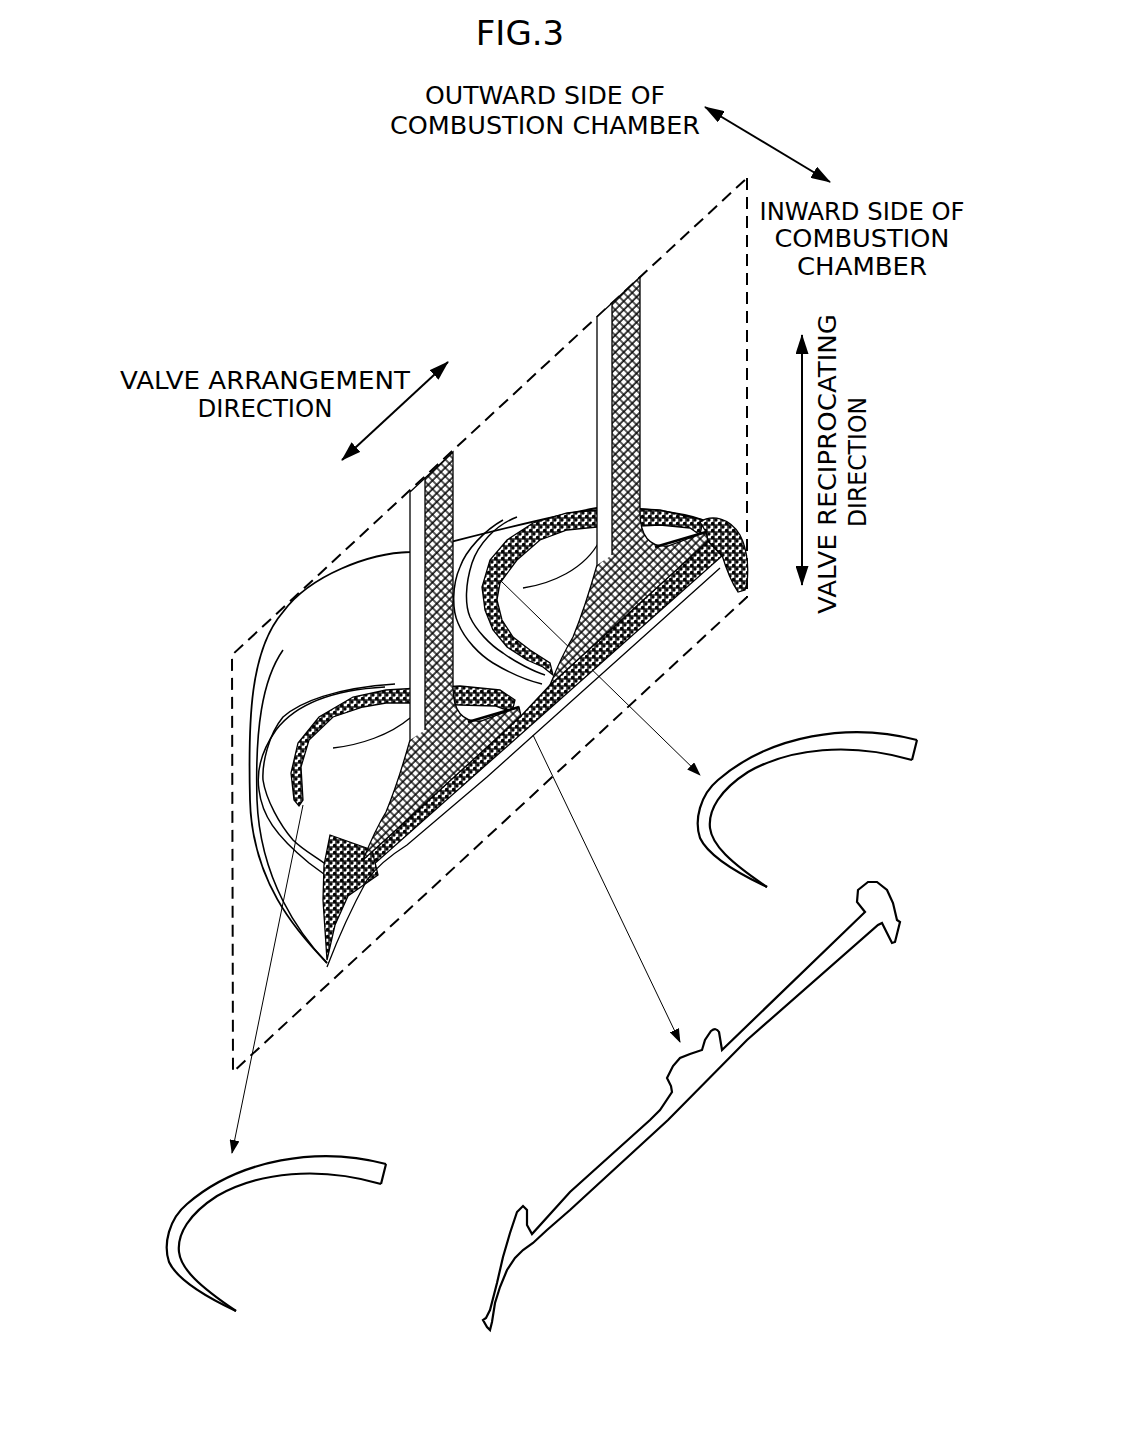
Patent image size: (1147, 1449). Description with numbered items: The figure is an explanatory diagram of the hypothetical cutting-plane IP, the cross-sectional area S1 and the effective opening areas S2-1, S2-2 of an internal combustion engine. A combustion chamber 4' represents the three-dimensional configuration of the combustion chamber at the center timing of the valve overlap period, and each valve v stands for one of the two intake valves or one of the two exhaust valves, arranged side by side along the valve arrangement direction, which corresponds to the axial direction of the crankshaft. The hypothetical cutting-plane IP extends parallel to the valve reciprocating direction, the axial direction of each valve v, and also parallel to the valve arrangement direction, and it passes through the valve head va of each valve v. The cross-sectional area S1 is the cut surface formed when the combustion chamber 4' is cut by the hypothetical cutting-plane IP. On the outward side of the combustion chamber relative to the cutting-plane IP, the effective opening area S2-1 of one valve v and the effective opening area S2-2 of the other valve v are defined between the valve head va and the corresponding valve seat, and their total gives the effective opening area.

The hypothetical cutting-plane IP is at (522, 372).
The combustion chamber 4' is at (468, 735).
The valve v is at (641, 350).
The valve head va is at (630, 615).
The effective opening area S2-1 is at (547, 545).
The effective opening area S2-2 is at (355, 708).
The cross-sectional area S1 is at (748, 1012).